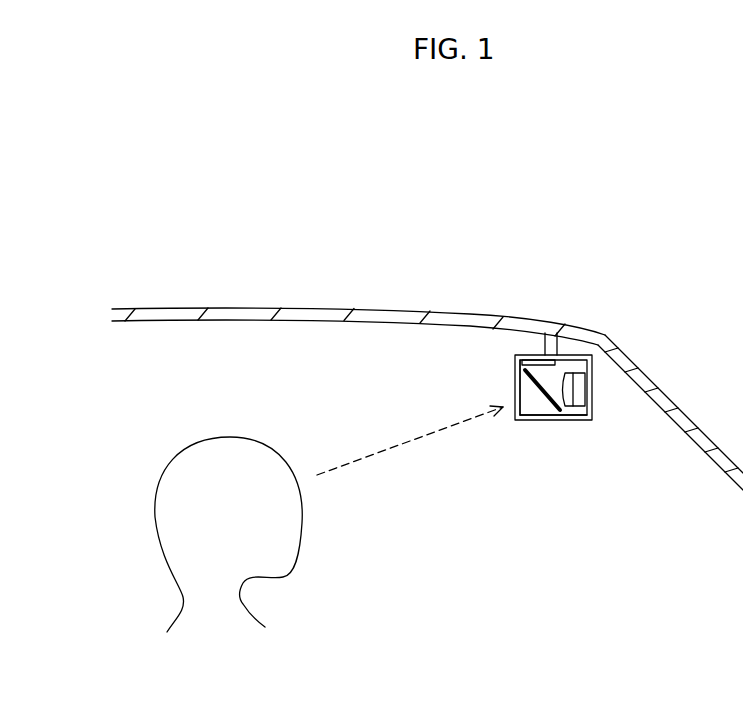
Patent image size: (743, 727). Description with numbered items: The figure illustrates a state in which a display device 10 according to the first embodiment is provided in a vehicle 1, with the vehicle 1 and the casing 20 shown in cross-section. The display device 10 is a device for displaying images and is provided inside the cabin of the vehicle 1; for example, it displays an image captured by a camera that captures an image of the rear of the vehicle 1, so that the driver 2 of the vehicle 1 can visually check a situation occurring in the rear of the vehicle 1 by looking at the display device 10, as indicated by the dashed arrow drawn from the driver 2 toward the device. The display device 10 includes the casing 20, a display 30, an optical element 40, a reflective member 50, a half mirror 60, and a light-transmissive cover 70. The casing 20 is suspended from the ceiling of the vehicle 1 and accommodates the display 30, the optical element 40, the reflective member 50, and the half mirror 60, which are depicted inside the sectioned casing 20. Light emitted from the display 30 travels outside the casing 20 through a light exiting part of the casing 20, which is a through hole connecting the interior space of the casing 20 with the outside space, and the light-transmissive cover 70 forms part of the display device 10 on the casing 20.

The vehicle 1 is at (329, 308).
The driver 2 is at (230, 450).
The display device 10 is at (503, 372).
The casing 20 is at (543, 420).
The display 30 is at (537, 355).
The optical element 40 is at (567, 400).
The reflective member 50 is at (582, 388).
The half mirror 60 is at (546, 393).
The light-transmissive cover 70 is at (518, 392).